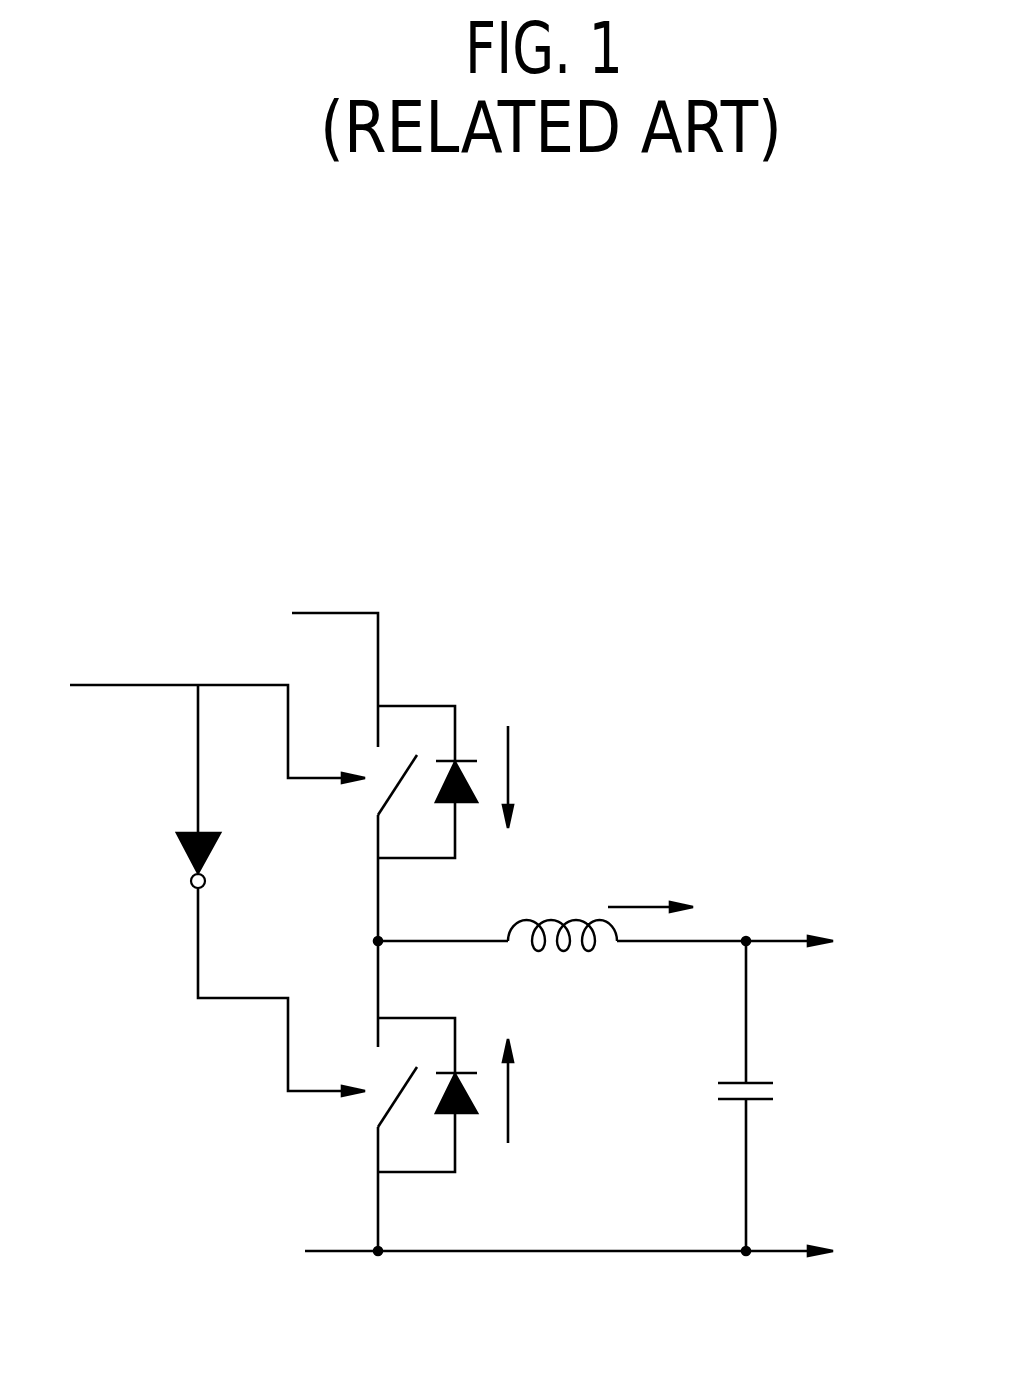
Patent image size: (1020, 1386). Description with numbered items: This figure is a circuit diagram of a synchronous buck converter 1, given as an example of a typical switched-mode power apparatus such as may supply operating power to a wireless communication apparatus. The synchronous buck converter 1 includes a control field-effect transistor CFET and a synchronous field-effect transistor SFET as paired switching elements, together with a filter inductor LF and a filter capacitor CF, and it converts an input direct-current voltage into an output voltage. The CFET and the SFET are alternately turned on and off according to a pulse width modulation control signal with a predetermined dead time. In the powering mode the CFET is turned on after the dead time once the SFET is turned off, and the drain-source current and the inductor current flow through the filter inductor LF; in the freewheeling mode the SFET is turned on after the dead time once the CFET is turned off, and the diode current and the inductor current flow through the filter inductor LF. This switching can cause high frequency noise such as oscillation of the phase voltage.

The synchronous buck converter 1 is at (752, 705).
The control field-effect transistor CFET is at (378, 830).
The synchronous field-effect transistor SFET is at (378, 1140).
The filter inductor LF is at (562, 914).
The filter capacitor CF is at (764, 1096).